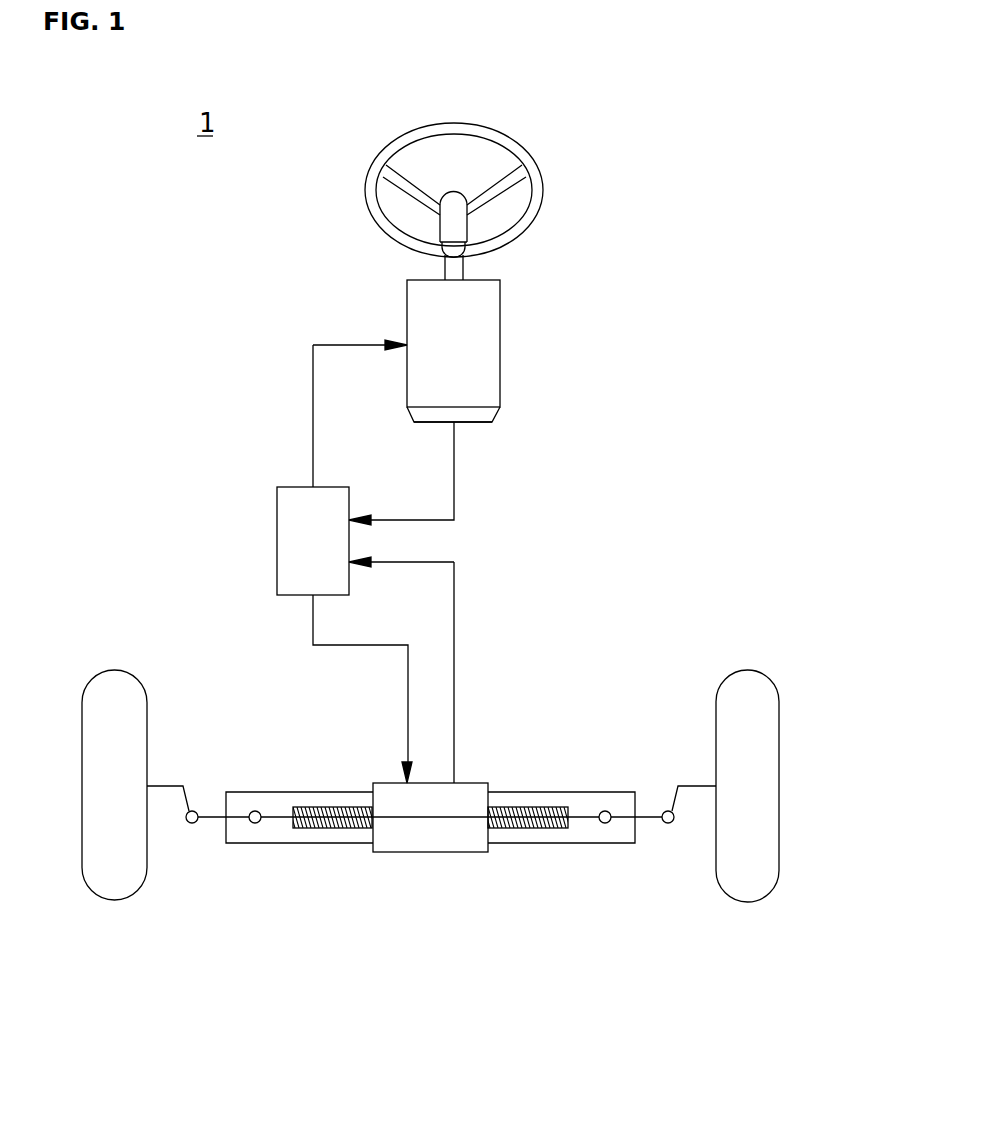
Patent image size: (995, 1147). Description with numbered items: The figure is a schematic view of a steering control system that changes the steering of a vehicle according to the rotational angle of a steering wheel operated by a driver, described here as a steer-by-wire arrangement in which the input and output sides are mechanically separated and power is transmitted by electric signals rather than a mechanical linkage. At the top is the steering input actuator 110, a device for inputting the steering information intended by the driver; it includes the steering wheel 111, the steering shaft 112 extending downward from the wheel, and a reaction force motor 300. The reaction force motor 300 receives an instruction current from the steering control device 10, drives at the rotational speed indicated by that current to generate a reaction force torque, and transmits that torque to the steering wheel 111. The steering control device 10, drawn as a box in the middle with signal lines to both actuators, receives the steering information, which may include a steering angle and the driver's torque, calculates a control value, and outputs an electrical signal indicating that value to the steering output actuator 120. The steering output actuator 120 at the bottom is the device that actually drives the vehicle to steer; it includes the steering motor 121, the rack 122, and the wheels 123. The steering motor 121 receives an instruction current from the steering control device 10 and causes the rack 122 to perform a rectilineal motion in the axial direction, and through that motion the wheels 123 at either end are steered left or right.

The steering control device 10 is at (277, 541).
The steering input actuator 110 is at (528, 201).
The steering wheel 111 is at (562, 184).
The steering shaft 112 is at (500, 345).
The reaction force motor 300 is at (475, 423).
The steering output actuator 120 is at (431, 883).
The steering motor 121 is at (492, 878).
The rack 122 is at (277, 843).
The wheels 123 is at (113, 901).